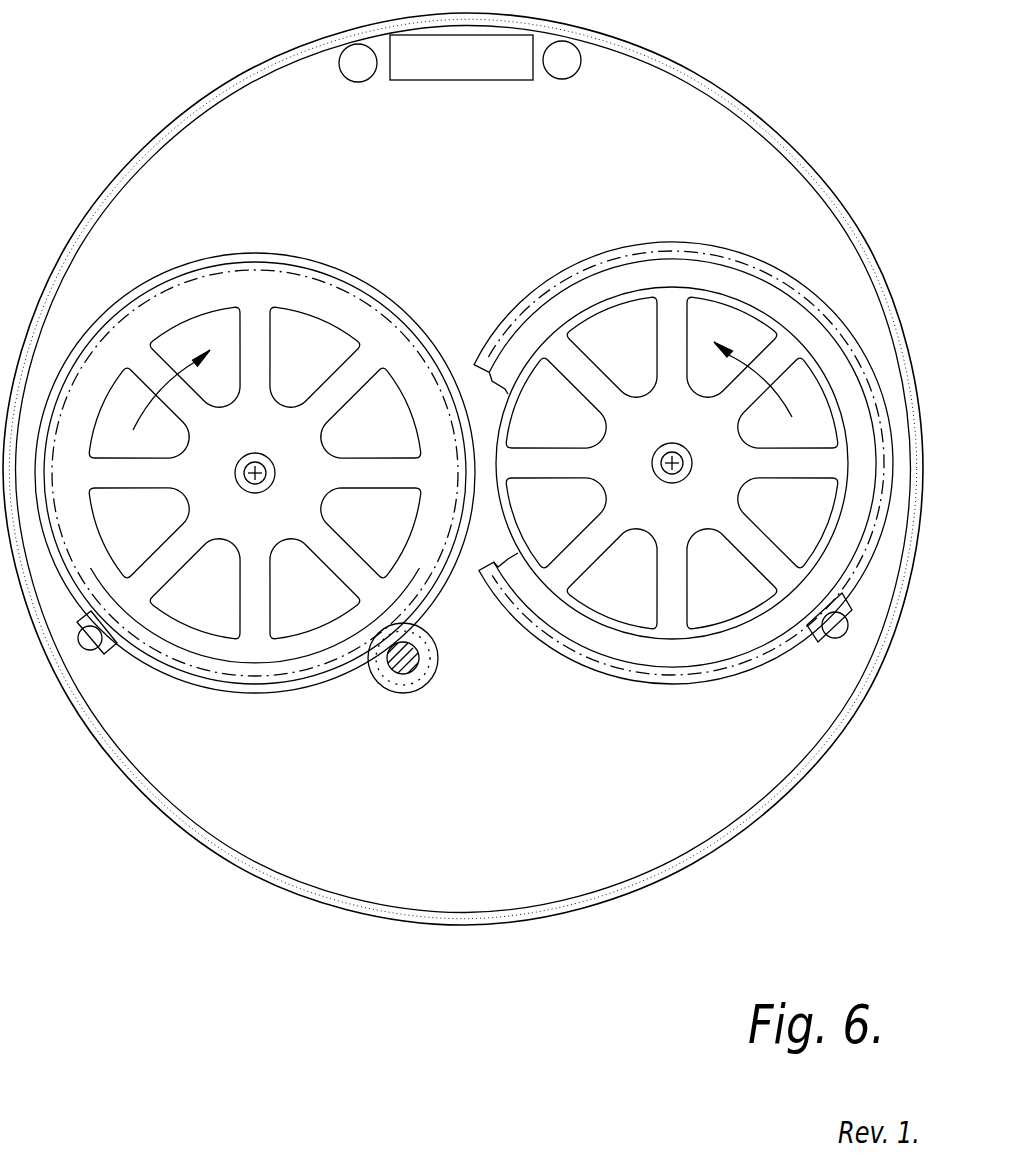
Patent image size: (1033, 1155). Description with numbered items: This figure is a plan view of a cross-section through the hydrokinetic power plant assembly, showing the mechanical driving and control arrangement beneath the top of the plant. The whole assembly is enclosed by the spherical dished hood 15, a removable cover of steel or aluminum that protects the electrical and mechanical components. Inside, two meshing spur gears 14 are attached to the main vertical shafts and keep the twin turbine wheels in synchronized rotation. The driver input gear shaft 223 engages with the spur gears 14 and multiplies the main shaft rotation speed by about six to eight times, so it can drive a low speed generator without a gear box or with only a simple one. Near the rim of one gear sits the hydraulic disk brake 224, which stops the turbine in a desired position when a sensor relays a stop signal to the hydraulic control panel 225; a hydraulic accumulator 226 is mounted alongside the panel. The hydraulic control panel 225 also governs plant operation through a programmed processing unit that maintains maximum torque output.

The spur gears 14 is at (545, 322).
The spherical dished hood 15 is at (743, 110).
The driver input gear shaft 223 is at (415, 667).
The hydraulic disk brake 224 is at (91, 640).
The hydraulic control panel 225 is at (452, 63).
The hydraulic accumulator 226 is at (358, 67).